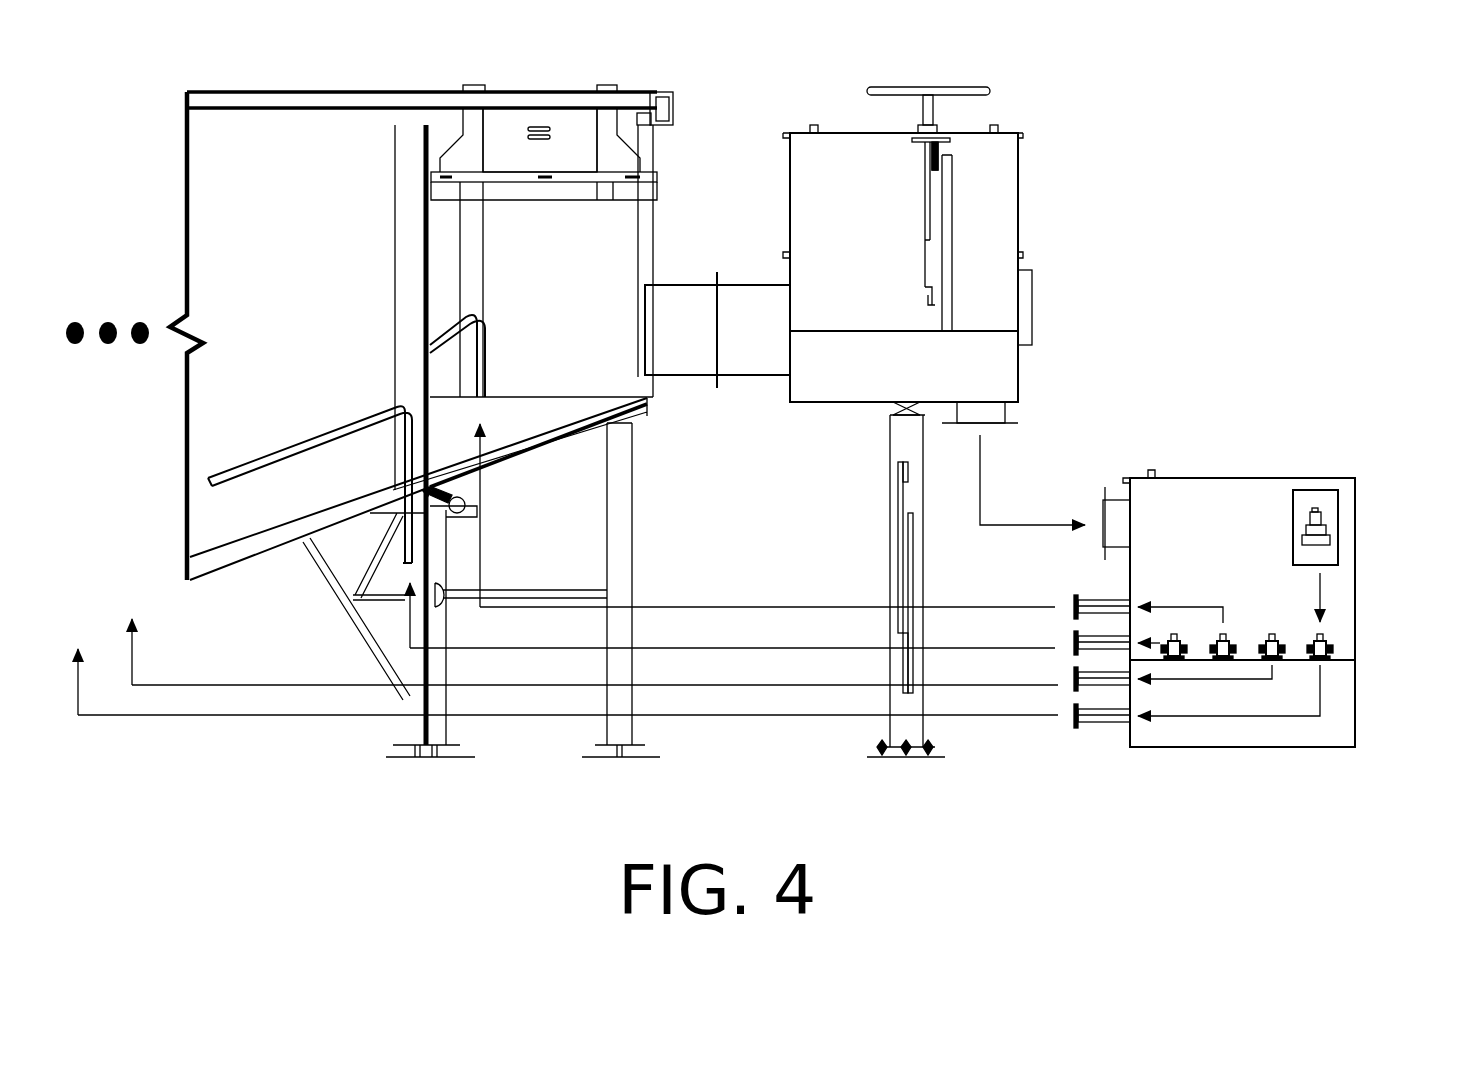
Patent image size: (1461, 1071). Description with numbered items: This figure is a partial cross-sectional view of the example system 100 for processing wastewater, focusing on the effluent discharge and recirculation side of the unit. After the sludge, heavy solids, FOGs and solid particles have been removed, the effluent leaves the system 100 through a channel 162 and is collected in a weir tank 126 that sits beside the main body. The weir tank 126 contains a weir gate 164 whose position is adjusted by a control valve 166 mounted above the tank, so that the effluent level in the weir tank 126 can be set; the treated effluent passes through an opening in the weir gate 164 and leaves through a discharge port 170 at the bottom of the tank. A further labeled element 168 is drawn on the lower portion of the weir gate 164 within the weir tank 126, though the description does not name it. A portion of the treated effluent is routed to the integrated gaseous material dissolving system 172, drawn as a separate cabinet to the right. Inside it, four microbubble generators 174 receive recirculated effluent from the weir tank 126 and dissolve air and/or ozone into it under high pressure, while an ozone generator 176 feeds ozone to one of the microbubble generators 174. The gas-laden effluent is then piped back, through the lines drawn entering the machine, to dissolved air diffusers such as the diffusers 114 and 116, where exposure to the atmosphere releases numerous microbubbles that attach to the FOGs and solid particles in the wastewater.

The system for processing wastewater 100 is at (1174, 121).
The dissolved air diffuser 114 is at (350, 400).
The dissolved air diffuser 116 is at (492, 346).
The weir tank 126 is at (1032, 198).
The channel 162 is at (723, 250).
The weir gate 164 is at (916, 181).
The control valve 166 is at (918, 76).
The adjustment member 168 is at (922, 315).
The discharge port 170 is at (1024, 412).
The integrated gaseous material dissolving system 172 is at (1226, 460).
The microbubble generators 174 is at (1346, 647).
The ozone generator 176 is at (1346, 522).